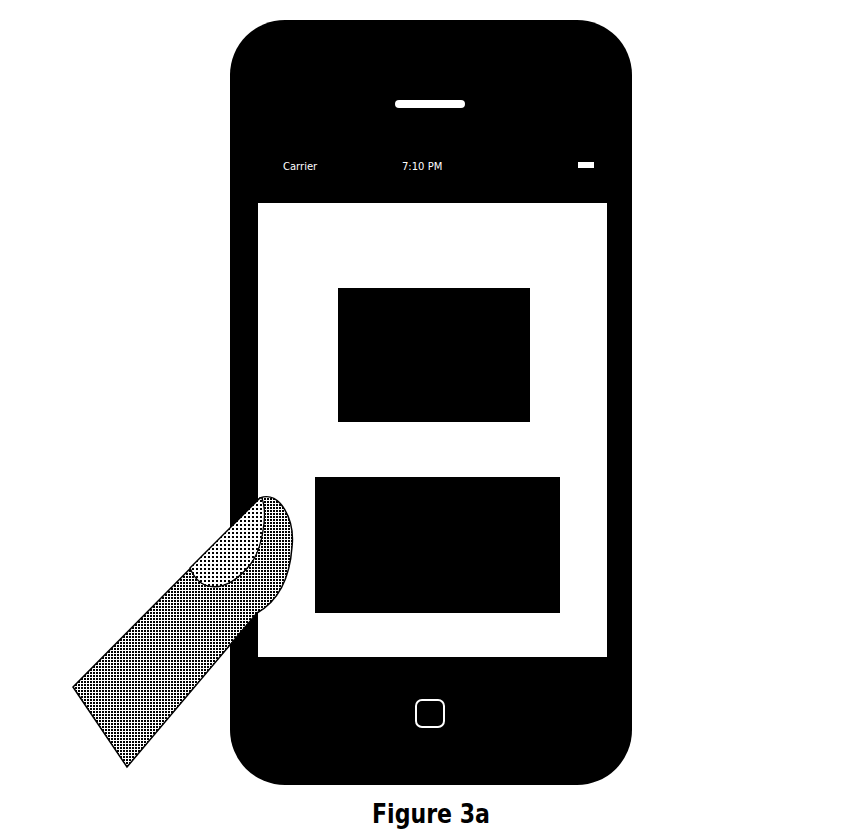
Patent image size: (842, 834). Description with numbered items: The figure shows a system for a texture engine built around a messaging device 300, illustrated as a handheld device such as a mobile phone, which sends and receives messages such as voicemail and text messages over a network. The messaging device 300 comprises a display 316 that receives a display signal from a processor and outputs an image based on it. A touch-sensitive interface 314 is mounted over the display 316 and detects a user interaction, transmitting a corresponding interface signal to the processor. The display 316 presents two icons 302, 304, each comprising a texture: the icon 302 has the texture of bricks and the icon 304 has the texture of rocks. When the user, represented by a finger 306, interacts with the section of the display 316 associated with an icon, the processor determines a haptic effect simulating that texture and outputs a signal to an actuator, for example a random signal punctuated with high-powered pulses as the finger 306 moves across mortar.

The messaging device 300 is at (652, 102).
The icon 302 is at (528, 377).
The icon 304 is at (558, 558).
The finger 306 is at (178, 628).
The touch-sensitive interface 314 is at (295, 453).
The display 316 is at (273, 318).